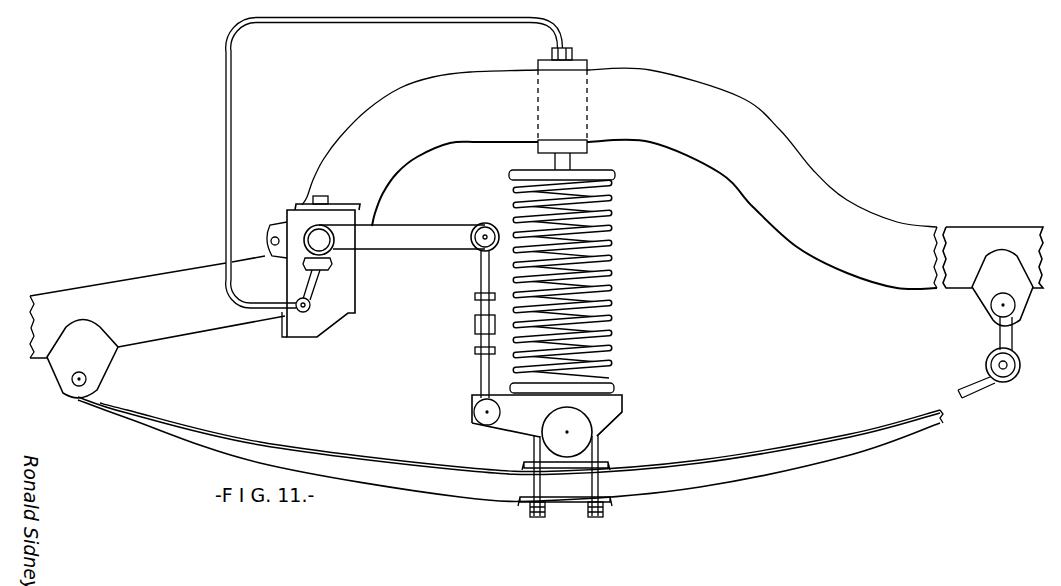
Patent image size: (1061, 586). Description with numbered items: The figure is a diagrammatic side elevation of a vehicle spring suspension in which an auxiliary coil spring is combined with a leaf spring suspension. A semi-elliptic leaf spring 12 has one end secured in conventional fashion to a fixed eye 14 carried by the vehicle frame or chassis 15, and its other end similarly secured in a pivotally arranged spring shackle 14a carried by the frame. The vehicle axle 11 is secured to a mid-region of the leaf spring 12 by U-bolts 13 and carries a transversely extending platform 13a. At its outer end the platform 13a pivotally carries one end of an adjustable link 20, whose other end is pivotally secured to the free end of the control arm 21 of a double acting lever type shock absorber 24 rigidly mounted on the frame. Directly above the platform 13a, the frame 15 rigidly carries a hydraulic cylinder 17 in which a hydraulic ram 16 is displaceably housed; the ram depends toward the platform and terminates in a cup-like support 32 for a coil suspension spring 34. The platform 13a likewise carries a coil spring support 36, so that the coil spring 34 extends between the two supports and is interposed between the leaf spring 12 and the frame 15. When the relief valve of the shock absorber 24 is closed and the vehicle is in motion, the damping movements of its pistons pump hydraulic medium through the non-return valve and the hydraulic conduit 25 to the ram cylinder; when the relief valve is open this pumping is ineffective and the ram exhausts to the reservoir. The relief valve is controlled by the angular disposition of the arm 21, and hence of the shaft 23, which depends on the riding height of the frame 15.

The vehicle axle 11 is at (577, 443).
The semi-elliptic leaf spring 12 is at (665, 485).
The U-bolts 13 is at (533, 447).
The transversely extending platform 13a is at (607, 416).
The fixed eye 14 is at (101, 376).
The spring shackle 14a is at (999, 338).
The vehicle frame or chassis 15 is at (845, 197).
The hydraulic ram 16 is at (575, 162).
The hydraulic cylinder 17 is at (584, 64).
The adjustable link 20 is at (481, 371).
The control arm 21 is at (402, 243).
The shaft 23 is at (310, 233).
The double acting lever type shock absorber 24 is at (372, 294).
The hydraulic conduit 25 is at (277, 318).
The cup-like support 32 is at (616, 180).
The coil suspension spring 34 is at (613, 280).
The coil spring support 36 is at (616, 386).